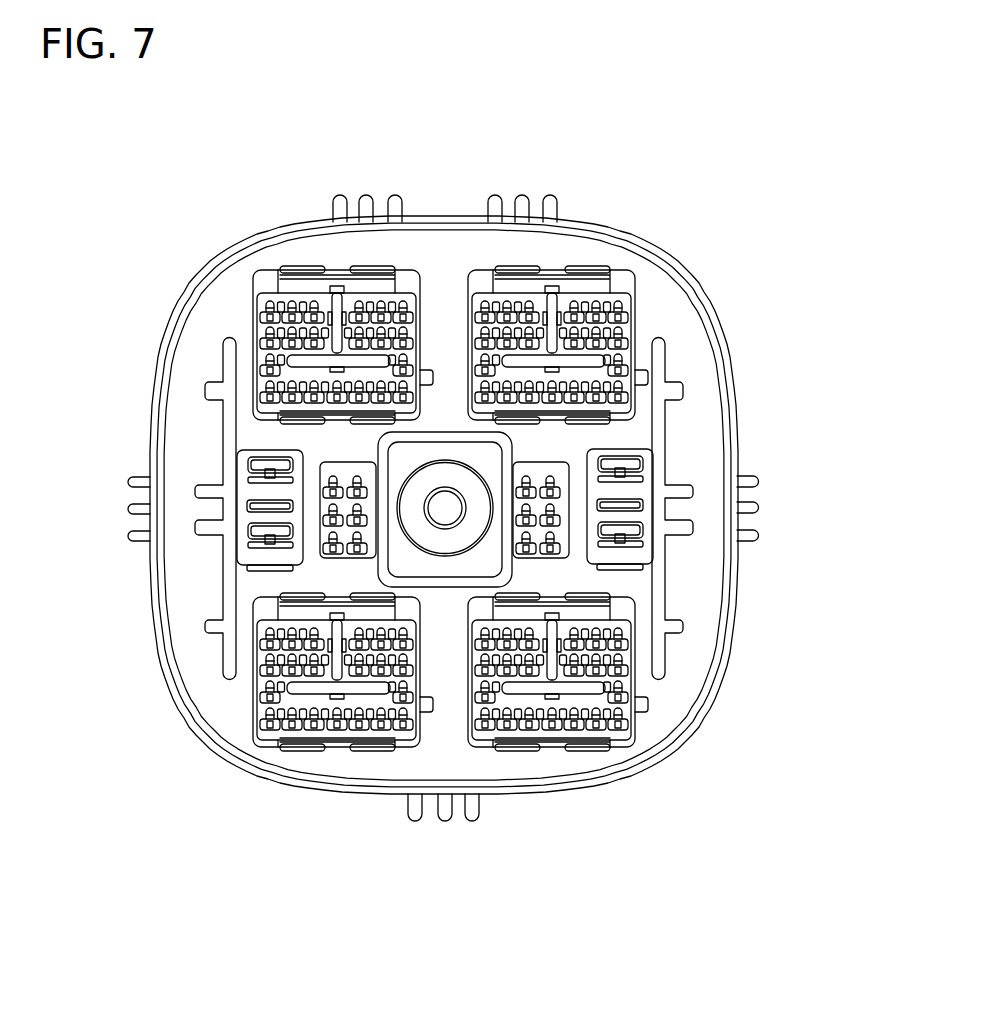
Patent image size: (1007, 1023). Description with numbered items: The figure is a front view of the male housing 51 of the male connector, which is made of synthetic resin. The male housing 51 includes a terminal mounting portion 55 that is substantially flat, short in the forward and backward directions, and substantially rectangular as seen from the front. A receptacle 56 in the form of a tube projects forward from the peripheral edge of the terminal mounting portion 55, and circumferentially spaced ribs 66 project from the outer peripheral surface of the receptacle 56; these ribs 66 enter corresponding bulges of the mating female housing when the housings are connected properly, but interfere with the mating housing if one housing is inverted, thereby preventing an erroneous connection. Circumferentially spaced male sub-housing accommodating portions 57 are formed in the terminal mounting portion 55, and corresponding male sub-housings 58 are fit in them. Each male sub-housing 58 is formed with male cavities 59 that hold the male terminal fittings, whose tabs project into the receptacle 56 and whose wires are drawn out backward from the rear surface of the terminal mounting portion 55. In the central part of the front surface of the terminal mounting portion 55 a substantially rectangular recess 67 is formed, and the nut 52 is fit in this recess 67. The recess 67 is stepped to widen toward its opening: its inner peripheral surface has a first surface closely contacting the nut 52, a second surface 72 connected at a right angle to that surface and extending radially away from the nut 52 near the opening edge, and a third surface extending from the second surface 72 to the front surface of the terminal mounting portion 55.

The male housing 51 is at (676, 258).
The nut 52 is at (422, 479).
The terminal mounting portion 55 is at (678, 418).
The receptacle 56 is at (721, 362).
The male sub-housing accommodating portion 57 is at (265, 277).
The male sub-housing 58 is at (258, 330).
The male cavity 59 is at (252, 462).
The rib 66 is at (366, 198).
The recess 67 is at (400, 572).
The second surface 72 is at (448, 432).